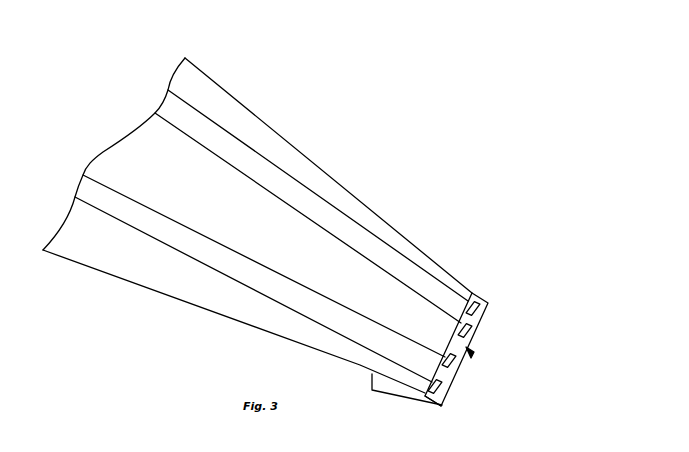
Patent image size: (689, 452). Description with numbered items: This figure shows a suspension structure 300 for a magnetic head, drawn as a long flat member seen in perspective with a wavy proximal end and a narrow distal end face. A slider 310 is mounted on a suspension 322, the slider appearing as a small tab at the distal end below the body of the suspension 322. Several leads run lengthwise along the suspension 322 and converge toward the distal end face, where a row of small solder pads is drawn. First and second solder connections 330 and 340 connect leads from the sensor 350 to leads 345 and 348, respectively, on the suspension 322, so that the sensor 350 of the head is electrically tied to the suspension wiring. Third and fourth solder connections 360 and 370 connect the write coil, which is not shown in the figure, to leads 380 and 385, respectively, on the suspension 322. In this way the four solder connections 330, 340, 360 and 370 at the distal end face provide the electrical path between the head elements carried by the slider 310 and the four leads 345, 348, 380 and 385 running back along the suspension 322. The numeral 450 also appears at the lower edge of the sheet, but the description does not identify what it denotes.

The suspension structure 300 is at (150, 346).
The slider 310 is at (395, 389).
The suspension 322 is at (325, 354).
The first solder connection 330 is at (433, 394).
The second solder connection 340 is at (488, 303).
The lead 345 is at (230, 276).
The lead 348 is at (372, 235).
The sensor 350 is at (470, 350).
The third solder connection 360 is at (452, 368).
The fourth solder connection 370 is at (470, 331).
The lead 380 is at (332, 297).
The lead 385 is at (412, 289).
The reference 450 is at (43, 447).